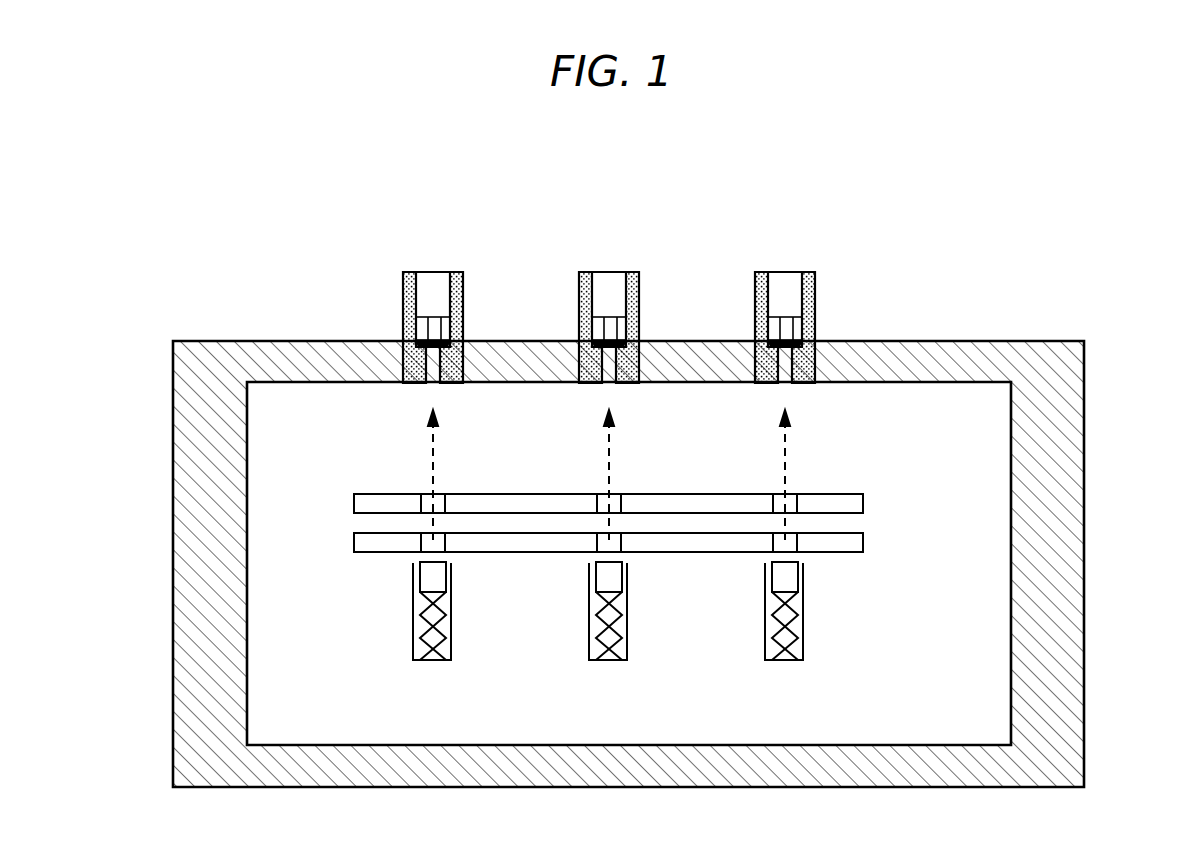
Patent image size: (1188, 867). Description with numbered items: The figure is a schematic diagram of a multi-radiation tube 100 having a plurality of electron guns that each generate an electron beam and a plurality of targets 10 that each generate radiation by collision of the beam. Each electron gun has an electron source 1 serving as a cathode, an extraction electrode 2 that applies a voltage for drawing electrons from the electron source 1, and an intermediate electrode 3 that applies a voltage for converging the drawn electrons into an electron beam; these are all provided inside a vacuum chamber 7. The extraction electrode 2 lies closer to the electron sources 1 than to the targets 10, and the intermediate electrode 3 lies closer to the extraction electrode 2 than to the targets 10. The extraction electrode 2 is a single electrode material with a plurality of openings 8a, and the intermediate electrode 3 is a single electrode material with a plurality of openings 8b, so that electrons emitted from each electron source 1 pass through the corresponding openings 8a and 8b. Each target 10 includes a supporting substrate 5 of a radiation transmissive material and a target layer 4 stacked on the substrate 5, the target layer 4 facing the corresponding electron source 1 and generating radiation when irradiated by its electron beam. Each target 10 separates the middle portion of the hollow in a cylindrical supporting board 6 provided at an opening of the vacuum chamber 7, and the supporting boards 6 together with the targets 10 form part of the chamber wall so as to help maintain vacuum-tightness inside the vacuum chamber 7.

The radiation tube 100 is at (972, 311).
The vacuum chamber 7 is at (1084, 600).
The target 10 is at (636, 254).
The supporting board 6 is at (755, 288).
The supporting substrate 5 is at (777, 316).
The target layer 4 is at (800, 348).
The intermediate electrode 3 is at (863, 502).
The extraction electrode 2 is at (863, 548).
The opening 8b is at (795, 493).
The opening 8a is at (779, 525).
The electron source 1 is at (798, 573).